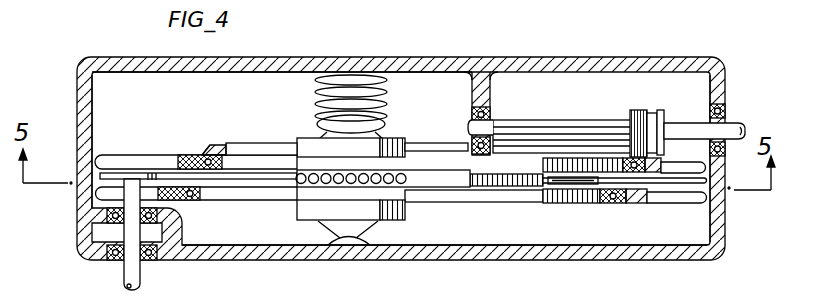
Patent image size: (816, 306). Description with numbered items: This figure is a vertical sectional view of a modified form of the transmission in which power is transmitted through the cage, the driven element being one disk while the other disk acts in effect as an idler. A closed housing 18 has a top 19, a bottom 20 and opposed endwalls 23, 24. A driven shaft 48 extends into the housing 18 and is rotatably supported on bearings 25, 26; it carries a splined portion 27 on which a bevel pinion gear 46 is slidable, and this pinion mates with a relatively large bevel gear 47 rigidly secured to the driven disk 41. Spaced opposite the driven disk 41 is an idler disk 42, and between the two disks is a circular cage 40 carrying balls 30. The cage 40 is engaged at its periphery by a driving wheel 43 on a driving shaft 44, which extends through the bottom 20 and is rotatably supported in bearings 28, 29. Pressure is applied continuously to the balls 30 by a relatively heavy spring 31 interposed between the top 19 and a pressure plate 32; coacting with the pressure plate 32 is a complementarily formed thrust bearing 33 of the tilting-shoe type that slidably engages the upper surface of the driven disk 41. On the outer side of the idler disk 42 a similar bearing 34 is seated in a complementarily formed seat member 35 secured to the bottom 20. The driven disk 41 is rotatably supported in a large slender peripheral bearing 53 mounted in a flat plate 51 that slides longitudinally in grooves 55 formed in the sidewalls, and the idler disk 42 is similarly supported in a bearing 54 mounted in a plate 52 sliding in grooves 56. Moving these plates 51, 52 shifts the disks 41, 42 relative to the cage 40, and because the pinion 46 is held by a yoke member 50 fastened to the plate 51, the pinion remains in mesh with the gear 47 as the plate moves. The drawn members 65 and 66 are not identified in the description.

The housing 18 is at (600, 58).
The top 19 is at (300, 60).
The bottom 20 is at (506, 251).
The endwall 23 is at (84, 82).
The endwall 24 is at (722, 88).
The bearing 25 is at (474, 112).
The bearing 26 is at (722, 112).
The splined portion 27 is at (574, 122).
The bearing 28 is at (103, 208).
The bearing 29 is at (108, 252).
The balls 30 is at (298, 188).
The spring 31 is at (364, 86).
The pressure plate 32 is at (377, 113).
The thrust bearing 33 is at (318, 138).
The Kingsbury bearing 34 is at (407, 206).
The seat member 35 is at (372, 246).
The cage 40 is at (476, 180).
The driven disk 41 is at (271, 157).
The idler disk 42 is at (535, 192).
The driving wheel 43 is at (145, 170).
The driving shaft 44 is at (128, 274).
The bevel pinion gear 46 is at (646, 110).
The bevel gear 47 is at (222, 143).
The driven shaft 48 is at (742, 127).
The yoke member 50 is at (660, 114).
The plate 51 is at (190, 153).
The plate 52 is at (639, 206).
The peripheral bearing 53 is at (203, 150).
The bearing 54 is at (200, 199).
The grooves 55 is at (700, 165).
The grooves 56 is at (700, 203).
The pin 65 is at (588, 200).
The bearing 66 is at (642, 182).